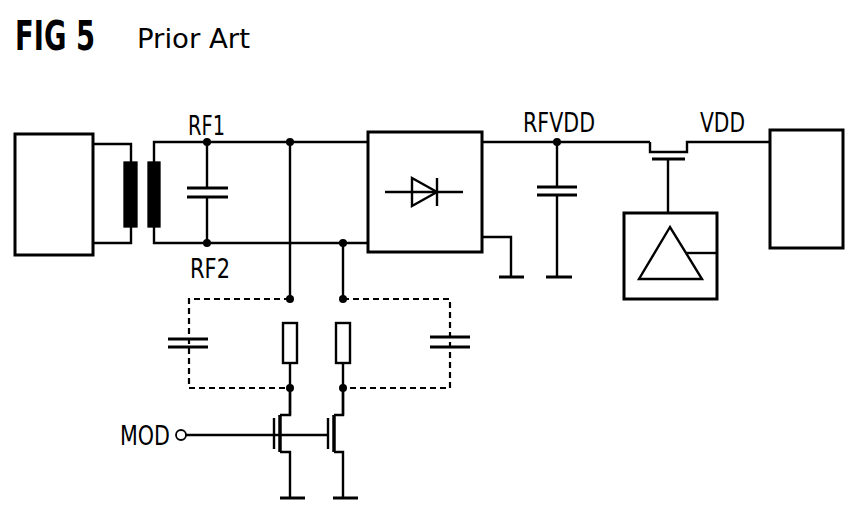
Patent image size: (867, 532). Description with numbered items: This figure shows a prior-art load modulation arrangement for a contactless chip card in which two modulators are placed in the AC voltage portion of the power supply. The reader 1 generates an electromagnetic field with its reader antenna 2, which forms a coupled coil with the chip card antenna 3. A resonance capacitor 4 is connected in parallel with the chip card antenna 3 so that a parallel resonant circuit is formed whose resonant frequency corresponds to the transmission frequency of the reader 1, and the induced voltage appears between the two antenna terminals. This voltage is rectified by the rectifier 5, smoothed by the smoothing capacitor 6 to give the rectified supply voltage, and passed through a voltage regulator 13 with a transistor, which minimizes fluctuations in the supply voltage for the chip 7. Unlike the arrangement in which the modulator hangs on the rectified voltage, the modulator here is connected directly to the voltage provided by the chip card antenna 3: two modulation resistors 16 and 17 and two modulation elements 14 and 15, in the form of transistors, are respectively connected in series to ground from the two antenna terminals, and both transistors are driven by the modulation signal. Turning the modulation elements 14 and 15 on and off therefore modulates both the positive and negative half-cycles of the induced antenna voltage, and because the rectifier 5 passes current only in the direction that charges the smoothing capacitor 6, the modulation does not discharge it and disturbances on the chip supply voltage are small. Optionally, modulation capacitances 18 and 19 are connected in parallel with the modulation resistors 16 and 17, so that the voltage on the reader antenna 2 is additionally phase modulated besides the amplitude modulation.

The reader 1 is at (53, 134).
The reader antenna 2 is at (128, 169).
The chip card antenna 3 is at (159, 169).
The resonance capacitor 4 is at (228, 191).
The rectifier 5 is at (413, 132).
The smoothing capacitor 6 is at (565, 198).
The chip 7 is at (808, 130).
The voltage regulator 13 is at (670, 300).
The modulation element 14 is at (273, 445).
The modulation element 15 is at (338, 438).
The modulation resistor 16 is at (284, 348).
The modulation resistor 17 is at (351, 343).
The modulation capacitance 18 is at (168, 339).
The modulation capacitance 19 is at (470, 343).